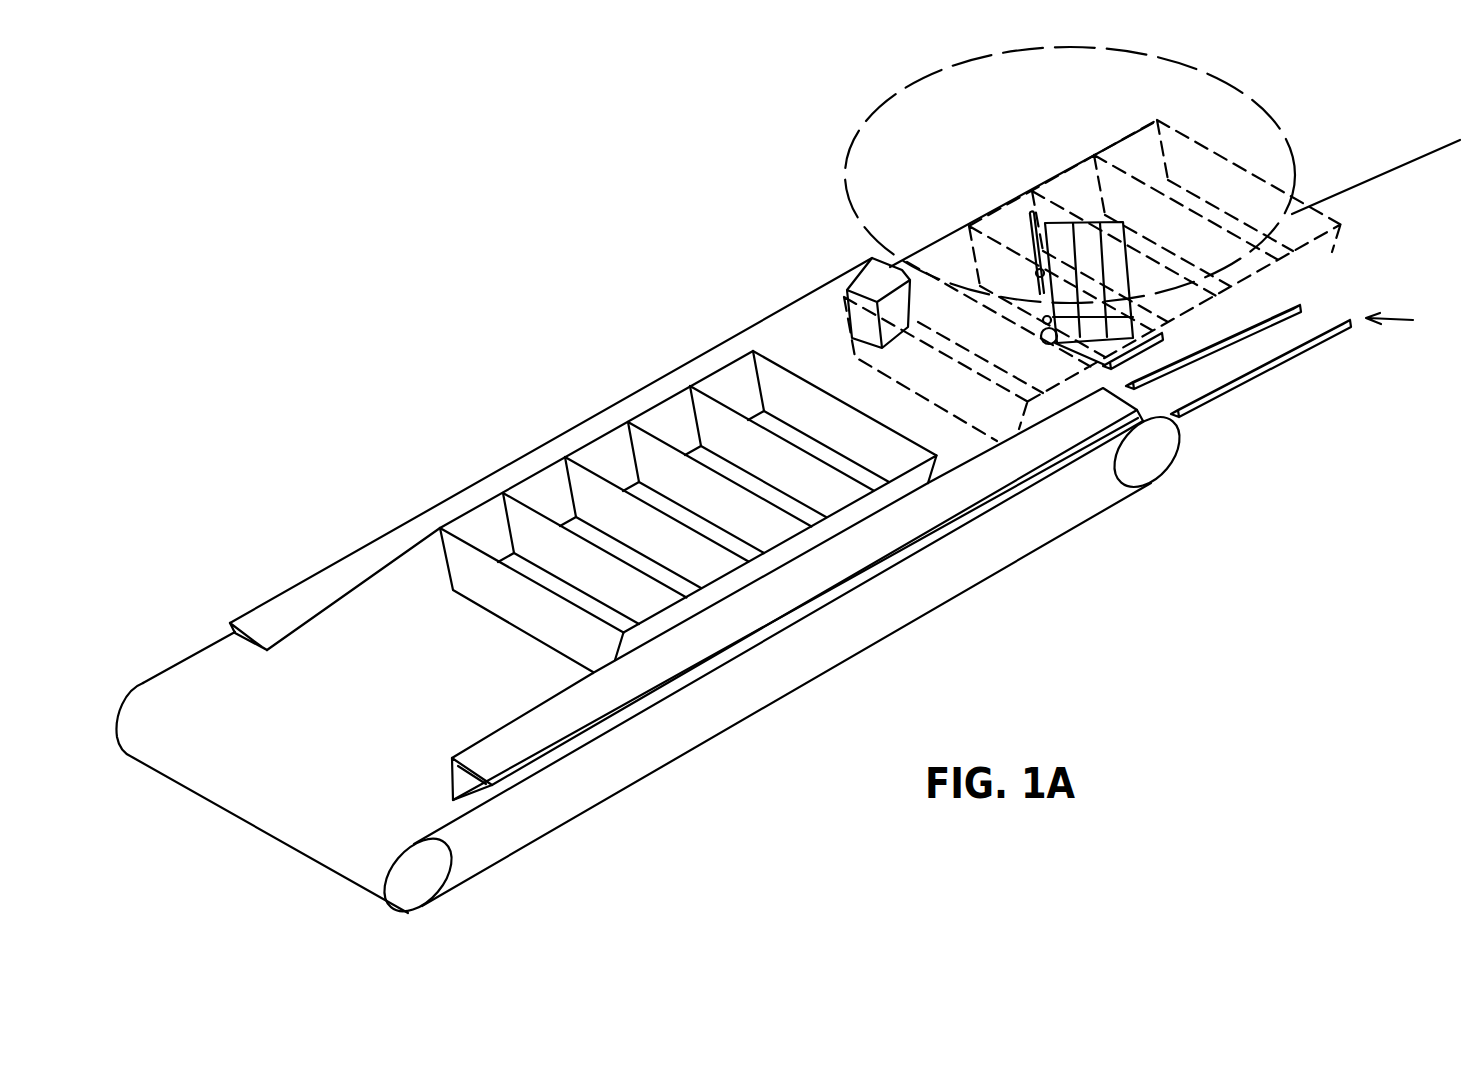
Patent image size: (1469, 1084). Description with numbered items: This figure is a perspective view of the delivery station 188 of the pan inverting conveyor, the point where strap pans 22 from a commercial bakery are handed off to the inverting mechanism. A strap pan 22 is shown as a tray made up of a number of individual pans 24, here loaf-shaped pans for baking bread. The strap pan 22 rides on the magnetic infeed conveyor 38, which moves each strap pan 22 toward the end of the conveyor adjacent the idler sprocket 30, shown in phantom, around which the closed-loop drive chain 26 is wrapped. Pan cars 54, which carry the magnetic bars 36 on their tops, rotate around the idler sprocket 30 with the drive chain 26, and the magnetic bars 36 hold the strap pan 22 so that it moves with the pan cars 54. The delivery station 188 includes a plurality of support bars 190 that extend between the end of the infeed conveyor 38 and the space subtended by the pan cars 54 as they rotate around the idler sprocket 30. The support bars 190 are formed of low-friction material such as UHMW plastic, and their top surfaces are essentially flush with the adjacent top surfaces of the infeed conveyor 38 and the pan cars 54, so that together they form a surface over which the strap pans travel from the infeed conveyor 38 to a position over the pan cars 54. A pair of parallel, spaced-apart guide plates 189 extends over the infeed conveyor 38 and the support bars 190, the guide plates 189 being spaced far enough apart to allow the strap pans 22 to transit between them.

The strap pan 22 is at (532, 618).
The individual pans 24 is at (547, 493).
The drive chain 26 is at (1390, 158).
The idler sprocket 30 is at (1035, 132).
The magnetic bar 36 is at (1087, 237).
The magnetic infeed conveyor 38 is at (655, 656).
The pan car 54 is at (1033, 247).
The delivery station 188 is at (1415, 319).
The guide plates 189 is at (370, 643).
The support bars 190 is at (1302, 306).